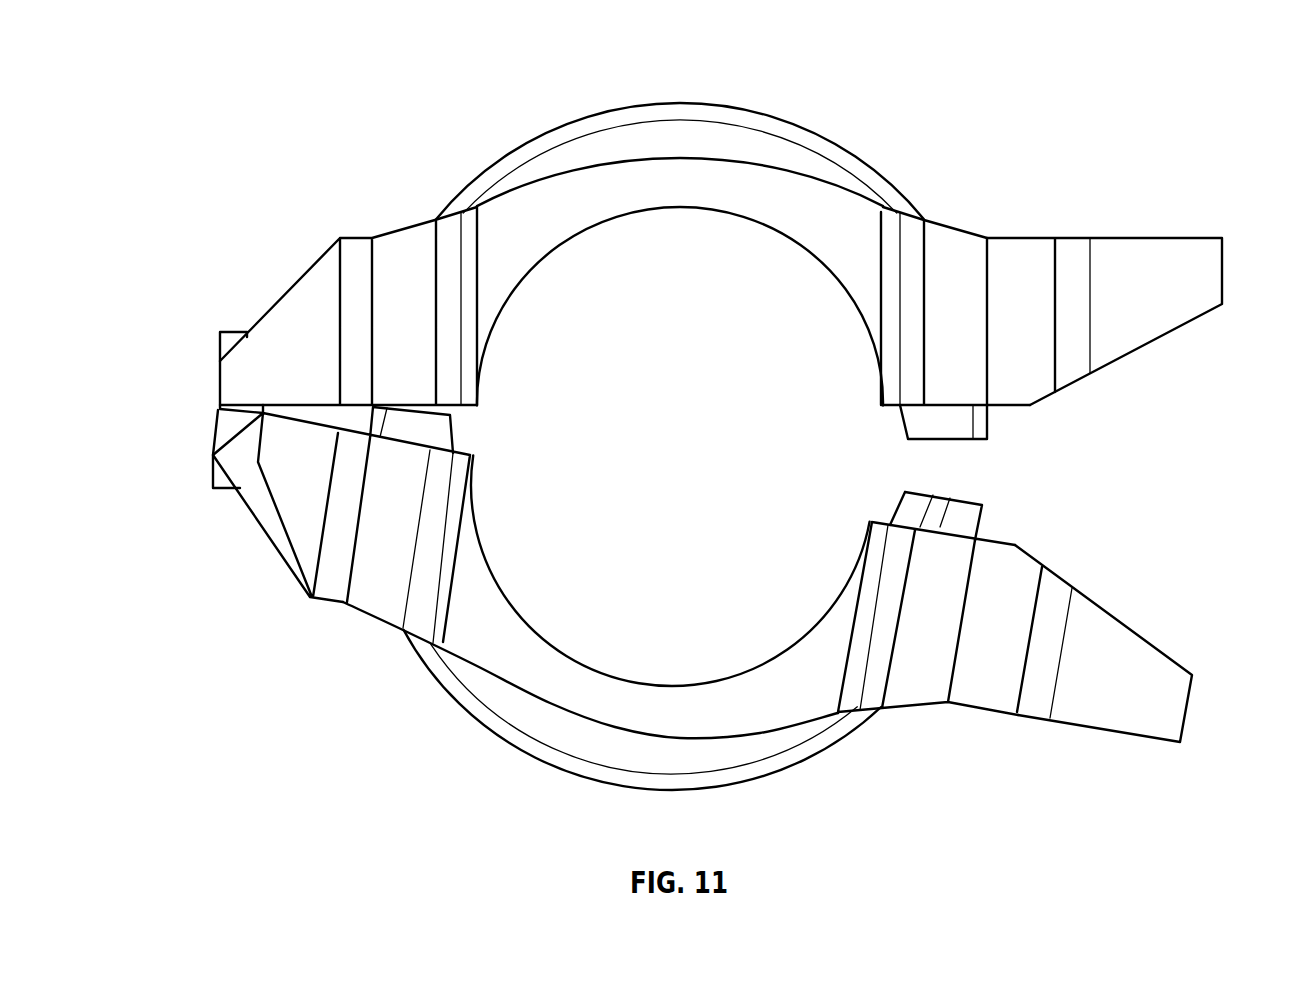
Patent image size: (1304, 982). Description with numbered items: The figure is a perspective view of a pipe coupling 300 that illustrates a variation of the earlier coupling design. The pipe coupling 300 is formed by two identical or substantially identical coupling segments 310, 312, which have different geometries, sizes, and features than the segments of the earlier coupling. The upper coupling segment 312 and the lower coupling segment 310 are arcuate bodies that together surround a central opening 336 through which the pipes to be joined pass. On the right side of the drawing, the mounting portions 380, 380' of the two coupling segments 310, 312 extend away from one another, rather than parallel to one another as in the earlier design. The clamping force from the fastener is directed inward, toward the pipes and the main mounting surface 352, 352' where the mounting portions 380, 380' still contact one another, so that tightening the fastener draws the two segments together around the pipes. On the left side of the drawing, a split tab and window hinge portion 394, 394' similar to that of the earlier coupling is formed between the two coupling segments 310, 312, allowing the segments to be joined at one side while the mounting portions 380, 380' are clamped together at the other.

The pipe coupling 300 is at (1023, 64).
The coupling segment 310 is at (515, 748).
The coupling segment 312 is at (572, 122).
The central bore 336 is at (633, 288).
The main mounting surface 352 is at (970, 515).
The main mounting surface 352' is at (984, 441).
The mounting portion 380 is at (1103, 669).
The mounting portion 380' is at (1123, 297).
The split tab and window hinge portion 394 is at (179, 480).
The split tab and window hinge portion 394' is at (181, 342).